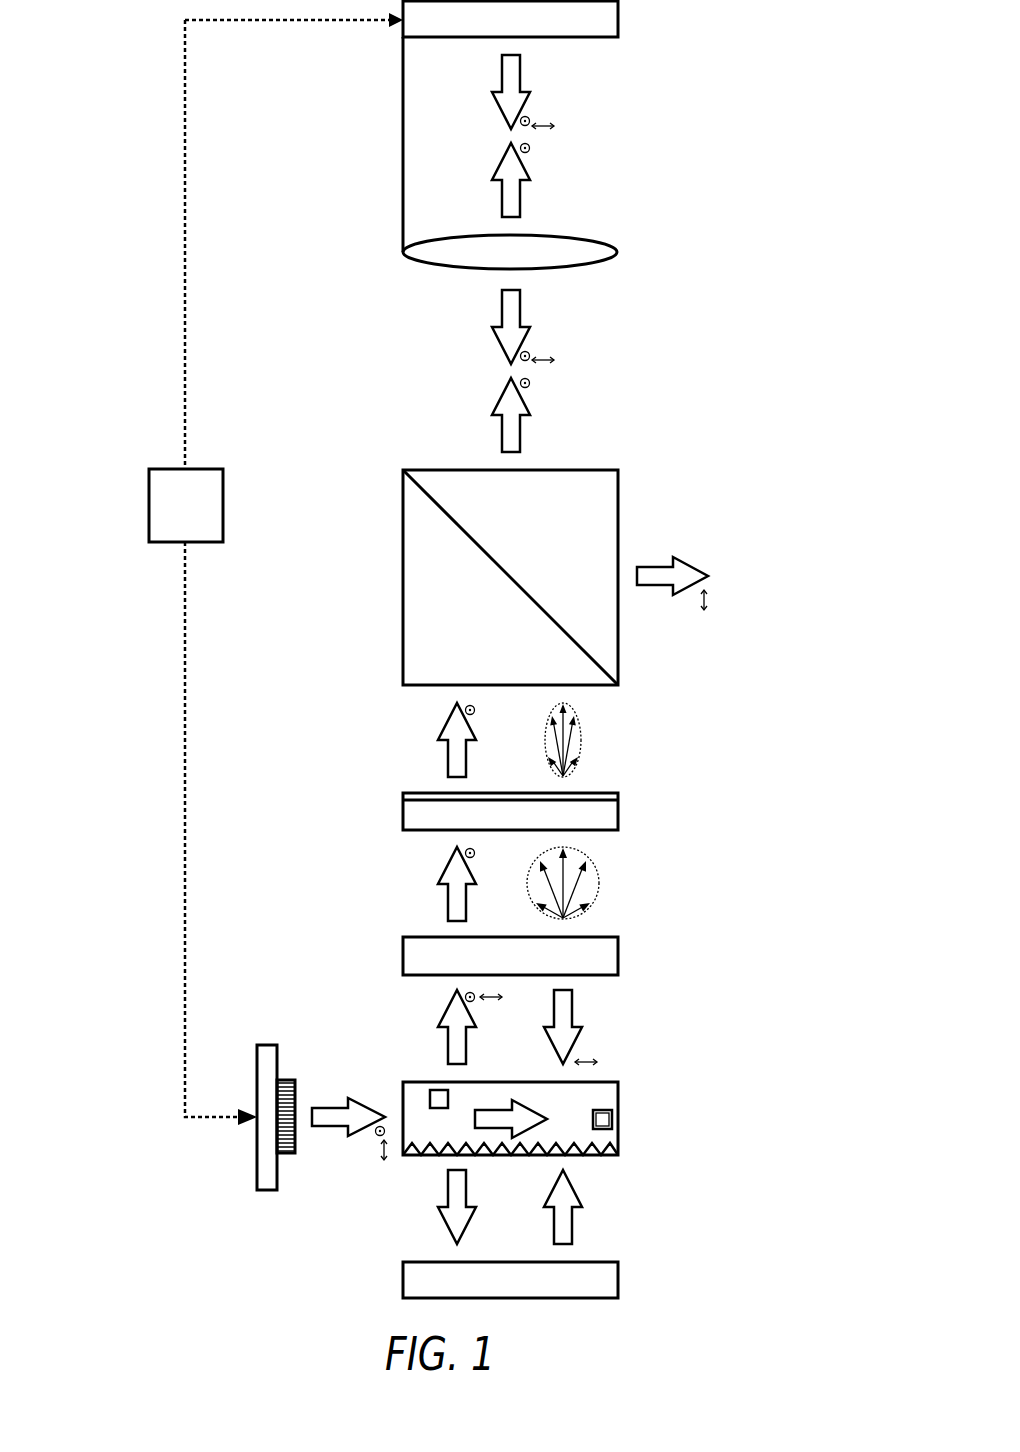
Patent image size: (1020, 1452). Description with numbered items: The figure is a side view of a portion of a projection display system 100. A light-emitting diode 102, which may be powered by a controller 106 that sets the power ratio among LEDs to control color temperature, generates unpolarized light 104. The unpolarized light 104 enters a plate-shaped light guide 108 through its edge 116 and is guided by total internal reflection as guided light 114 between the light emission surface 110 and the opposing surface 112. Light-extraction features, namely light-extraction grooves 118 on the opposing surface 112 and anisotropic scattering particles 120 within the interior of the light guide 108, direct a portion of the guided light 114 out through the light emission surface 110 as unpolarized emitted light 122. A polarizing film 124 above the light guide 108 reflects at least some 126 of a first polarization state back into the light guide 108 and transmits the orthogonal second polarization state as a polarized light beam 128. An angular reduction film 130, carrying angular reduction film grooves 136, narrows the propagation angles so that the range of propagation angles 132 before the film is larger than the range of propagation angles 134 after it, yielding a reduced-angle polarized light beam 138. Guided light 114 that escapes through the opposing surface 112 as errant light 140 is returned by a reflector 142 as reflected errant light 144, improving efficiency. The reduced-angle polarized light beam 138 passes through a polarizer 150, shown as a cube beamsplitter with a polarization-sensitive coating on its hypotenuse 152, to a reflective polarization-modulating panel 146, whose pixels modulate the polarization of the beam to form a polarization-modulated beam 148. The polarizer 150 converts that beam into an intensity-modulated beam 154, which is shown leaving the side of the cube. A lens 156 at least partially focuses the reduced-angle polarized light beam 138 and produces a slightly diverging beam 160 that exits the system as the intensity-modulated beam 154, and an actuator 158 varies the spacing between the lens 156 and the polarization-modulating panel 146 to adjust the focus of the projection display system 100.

The projection display system 100 is at (122, 62).
The light-emitting diode (LED) 102 is at (285, 1080).
The unpolarized light 104 is at (336, 1106).
The controller 106 is at (223, 505).
The light guide 108 is at (618, 1119).
The light emission surface 110 is at (618, 1082).
The opposing surface 112 is at (612, 1155).
The guided light 114 is at (497, 1107).
The edge 116 is at (403, 1092).
The light-extraction grooves 118 is at (507, 1155).
The anisotropic scattering particles 120 is at (600, 1118).
The unpolarized emitted light 122 is at (442, 1008).
The polarizing film 124 is at (618, 955).
The reflected first-polarization-state light 126 is at (574, 1005).
The polarized light beam 128 is at (442, 863).
The angular reduction film 130 is at (618, 812).
The range of propagation angles before the angular reduction film 132 is at (600, 886).
The range of propagation angles after the angular reduction film 134 is at (582, 741).
The angular reduction film grooves 136 is at (403, 795).
The reduced-angle polarized light beam 138 is at (500, 164).
The errant light 140 is at (442, 1224).
The reflector 142 is at (618, 1281).
The reflected errant light 144 is at (574, 1221).
The polarization-modulating panel 146 is at (618, 18).
The polarization-modulated beam 148 is at (497, 112).
The polarizer 150 is at (403, 580).
The hypotenuse 152 is at (479, 546).
The intensity-modulated beam 154 is at (657, 565).
The lens 156 is at (618, 250).
The actuator 158 is at (403, 143).
The slightly diverging beam 160 is at (497, 345).